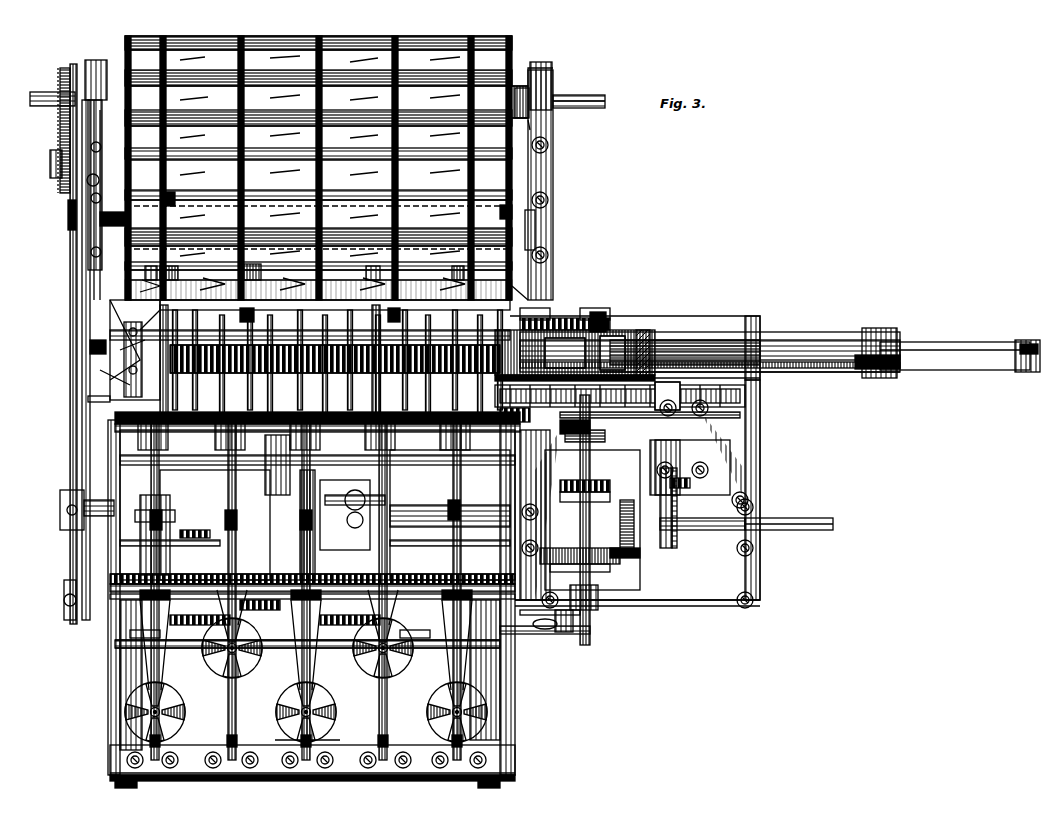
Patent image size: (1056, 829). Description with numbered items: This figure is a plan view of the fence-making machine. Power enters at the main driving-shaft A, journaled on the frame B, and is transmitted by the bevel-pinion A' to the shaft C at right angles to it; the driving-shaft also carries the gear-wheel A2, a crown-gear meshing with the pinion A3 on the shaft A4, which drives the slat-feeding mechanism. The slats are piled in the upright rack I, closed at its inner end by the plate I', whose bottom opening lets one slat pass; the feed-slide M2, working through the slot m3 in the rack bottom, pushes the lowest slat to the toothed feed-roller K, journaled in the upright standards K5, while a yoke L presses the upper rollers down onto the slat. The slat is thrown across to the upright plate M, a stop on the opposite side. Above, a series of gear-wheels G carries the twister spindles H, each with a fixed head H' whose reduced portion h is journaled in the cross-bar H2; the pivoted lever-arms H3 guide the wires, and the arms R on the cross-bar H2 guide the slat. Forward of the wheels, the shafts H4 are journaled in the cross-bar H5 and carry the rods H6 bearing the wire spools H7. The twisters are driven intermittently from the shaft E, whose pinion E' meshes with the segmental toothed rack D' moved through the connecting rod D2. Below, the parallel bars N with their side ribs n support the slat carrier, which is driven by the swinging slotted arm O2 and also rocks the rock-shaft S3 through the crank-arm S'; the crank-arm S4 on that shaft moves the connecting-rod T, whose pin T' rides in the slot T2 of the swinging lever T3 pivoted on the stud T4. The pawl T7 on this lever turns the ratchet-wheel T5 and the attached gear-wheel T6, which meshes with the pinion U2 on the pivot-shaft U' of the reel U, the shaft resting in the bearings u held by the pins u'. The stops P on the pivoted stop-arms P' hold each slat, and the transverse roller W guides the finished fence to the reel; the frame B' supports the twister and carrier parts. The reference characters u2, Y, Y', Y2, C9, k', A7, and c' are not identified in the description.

The reel U is at (318, 159).
The pivot-shaft U' is at (311, 106).
The pinion U2 is at (66, 70).
The bearings u is at (333, 79).
The bearing block u2 is at (535, 90).
The pins u' is at (526, 131).
The frame B is at (647, 462).
The frame B' is at (313, 421).
The connecting-rod T is at (76, 344).
The bolt or pin T' is at (51, 152).
The slot T2 is at (100, 150).
The swinging lever T3 is at (75, 240).
The stud T4 is at (55, 160).
The ratchet-wheel T5 is at (68, 185).
The gear-wheel T6 is at (70, 208).
The pawl T7 is at (102, 160).
The transverse roller W is at (128, 210).
The stop block Y is at (174, 196).
The lever Y' is at (99, 367).
The lever arm Y2 is at (118, 396).
The stops P is at (203, 272).
The stop-arms P' is at (317, 293).
The upright plate M is at (130, 350).
The feed-slide M2 is at (1020, 372).
The parallel bars N is at (310, 336).
The side ribs or flanges n is at (332, 344).
The arms R is at (331, 364).
The crank-arm S' is at (174, 551).
The rock-shaft S3 is at (215, 525).
The crank-arm S4 is at (72, 518).
The twister spindles or shafts H is at (312, 684).
The fixed heads H' is at (317, 580).
The cross-bar H2 is at (317, 414).
The lever-arms H3 is at (176, 535).
The shafts H4 is at (120, 712).
The cross-bar H5 is at (312, 779).
The rods H6 is at (470, 670).
The spools or reels H7 is at (303, 675).
The reduced portion h is at (304, 584).
The gear-wheels G is at (118, 578).
The pinion E' is at (307, 588).
The shaft E is at (307, 743).
The segmental toothed rack D' is at (293, 642).
The connecting rod or bar D2 is at (506, 632).
The swinging slotted arm or lever O2 is at (342, 525).
The gear C9 is at (471, 515).
The yoke L is at (540, 330).
The feed-roller K is at (620, 399).
The upright plates or standards K5 is at (600, 320).
The ratchet links k' is at (630, 420).
The upright rack I is at (710, 355).
The plate or piece I' is at (652, 344).
The slot m3 is at (960, 356).
The main driving-shaft A is at (746, 519).
The bevel-pinion A' is at (622, 529).
The gear-wheel A2 is at (672, 512).
The pinion A3 is at (686, 486).
The shaft A4 is at (680, 460).
The bar A7 is at (651, 419).
The shaft C is at (637, 523).
The collar c' is at (545, 629).